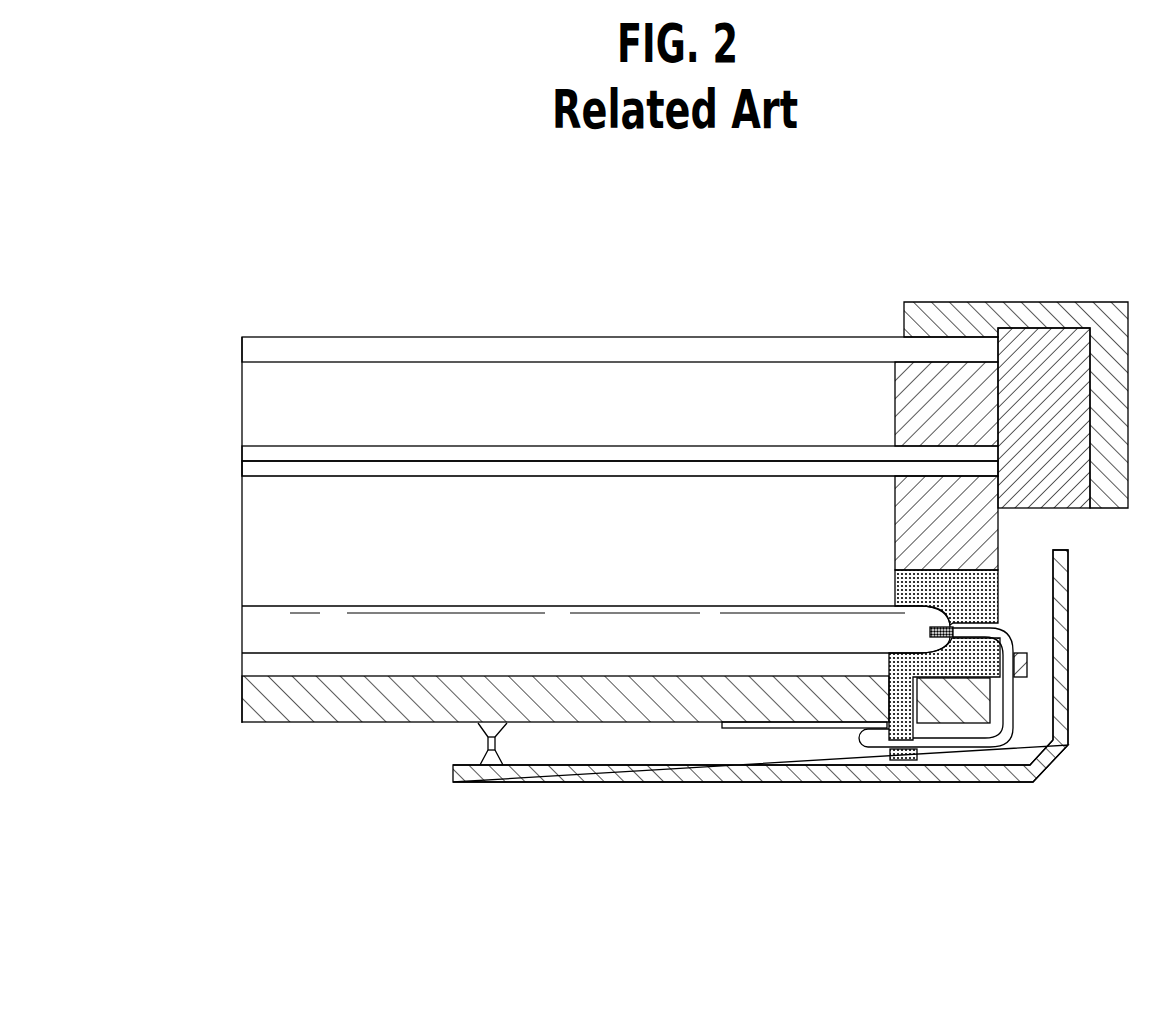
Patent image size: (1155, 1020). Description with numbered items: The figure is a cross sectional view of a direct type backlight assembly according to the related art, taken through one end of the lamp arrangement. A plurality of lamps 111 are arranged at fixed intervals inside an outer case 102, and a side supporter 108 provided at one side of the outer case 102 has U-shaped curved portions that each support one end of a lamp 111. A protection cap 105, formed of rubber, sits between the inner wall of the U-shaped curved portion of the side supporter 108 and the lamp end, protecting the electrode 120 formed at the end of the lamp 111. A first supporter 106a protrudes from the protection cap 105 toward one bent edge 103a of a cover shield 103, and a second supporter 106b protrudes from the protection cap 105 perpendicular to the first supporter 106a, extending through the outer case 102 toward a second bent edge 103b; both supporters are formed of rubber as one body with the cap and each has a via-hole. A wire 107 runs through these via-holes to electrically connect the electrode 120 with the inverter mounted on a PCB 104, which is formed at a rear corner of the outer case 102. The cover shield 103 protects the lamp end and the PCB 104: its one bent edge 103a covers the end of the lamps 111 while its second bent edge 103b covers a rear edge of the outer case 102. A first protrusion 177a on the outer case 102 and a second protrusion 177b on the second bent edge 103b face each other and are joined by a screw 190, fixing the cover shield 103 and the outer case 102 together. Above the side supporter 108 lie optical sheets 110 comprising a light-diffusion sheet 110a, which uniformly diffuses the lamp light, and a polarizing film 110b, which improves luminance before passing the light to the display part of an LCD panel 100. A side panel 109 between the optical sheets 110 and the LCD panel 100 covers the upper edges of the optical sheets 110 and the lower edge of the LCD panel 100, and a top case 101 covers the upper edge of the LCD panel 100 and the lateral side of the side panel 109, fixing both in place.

The LCD panel 100 is at (527, 352).
The top case 101 is at (1025, 310).
The outer case 102 is at (245, 702).
The cover shield 103 is at (768, 720).
The one bent edge 103a is at (1068, 740).
The second bent edge 103b is at (977, 768).
The PCB 104 is at (763, 730).
The protection cap 105 is at (910, 586).
The first supporter 106a is at (1028, 665).
The second supporter 106b is at (903, 762).
The wire 107 is at (1012, 705).
The side supporter 108 is at (905, 530).
The side panel 109 is at (1065, 500).
The optical sheets 110 is at (546, 462).
The light-diffusion sheet 110a is at (243, 469).
The polarizing film 110b is at (243, 452).
The lamps 111 is at (243, 629).
The electrode 120 is at (953, 626).
The first protrusion 177a is at (491, 752).
The second protrusion 177b is at (486, 740).
The screw 190 is at (435, 775).